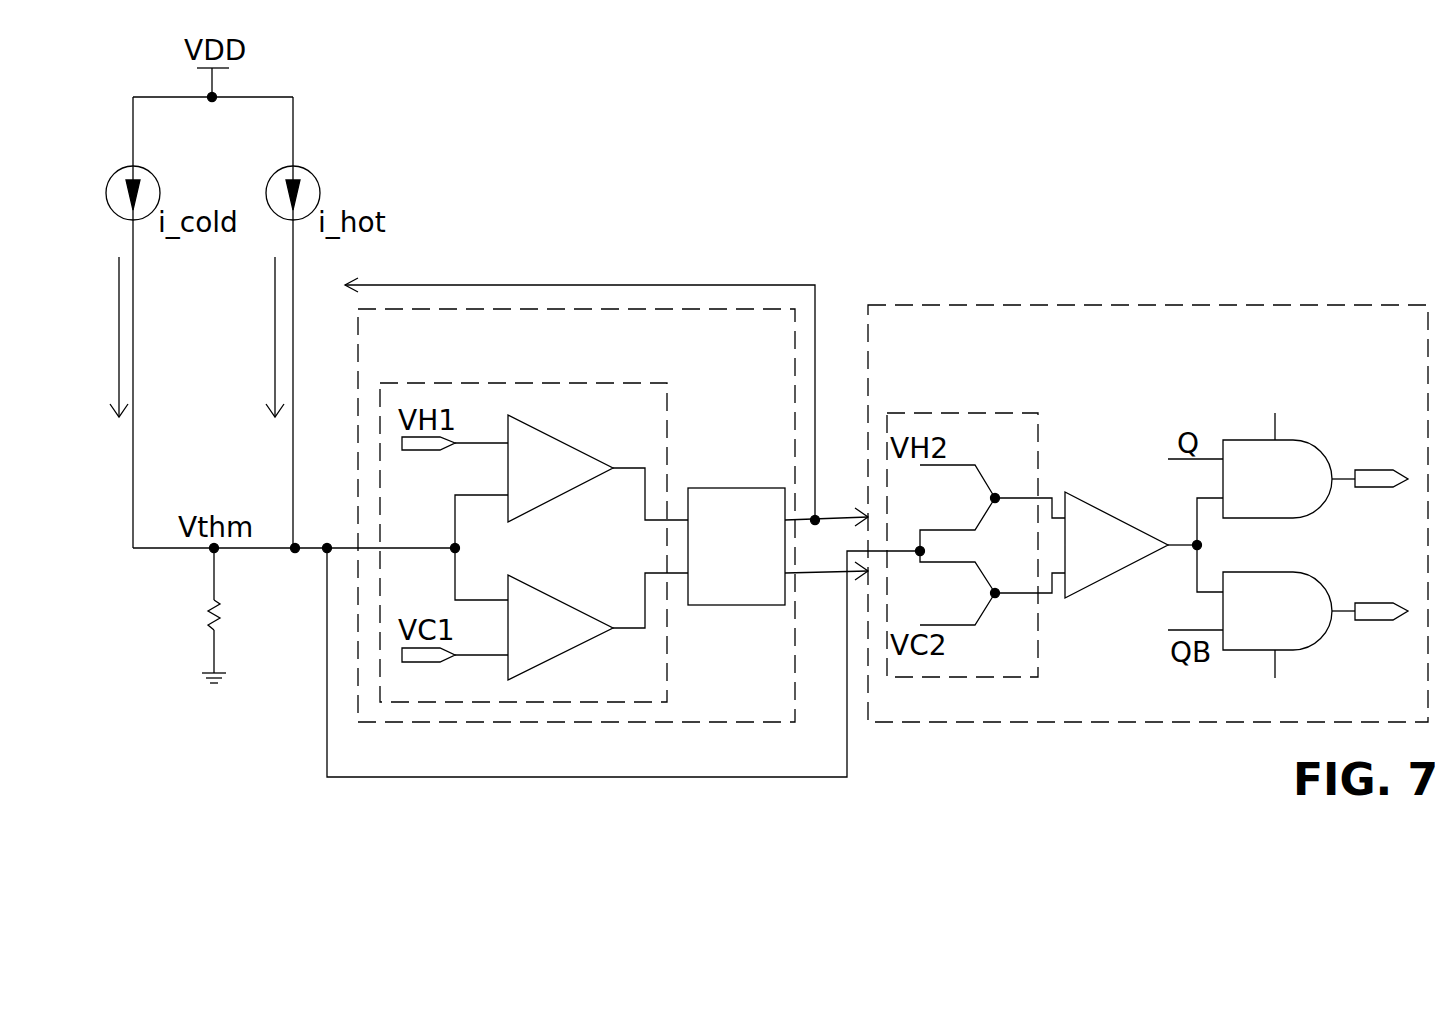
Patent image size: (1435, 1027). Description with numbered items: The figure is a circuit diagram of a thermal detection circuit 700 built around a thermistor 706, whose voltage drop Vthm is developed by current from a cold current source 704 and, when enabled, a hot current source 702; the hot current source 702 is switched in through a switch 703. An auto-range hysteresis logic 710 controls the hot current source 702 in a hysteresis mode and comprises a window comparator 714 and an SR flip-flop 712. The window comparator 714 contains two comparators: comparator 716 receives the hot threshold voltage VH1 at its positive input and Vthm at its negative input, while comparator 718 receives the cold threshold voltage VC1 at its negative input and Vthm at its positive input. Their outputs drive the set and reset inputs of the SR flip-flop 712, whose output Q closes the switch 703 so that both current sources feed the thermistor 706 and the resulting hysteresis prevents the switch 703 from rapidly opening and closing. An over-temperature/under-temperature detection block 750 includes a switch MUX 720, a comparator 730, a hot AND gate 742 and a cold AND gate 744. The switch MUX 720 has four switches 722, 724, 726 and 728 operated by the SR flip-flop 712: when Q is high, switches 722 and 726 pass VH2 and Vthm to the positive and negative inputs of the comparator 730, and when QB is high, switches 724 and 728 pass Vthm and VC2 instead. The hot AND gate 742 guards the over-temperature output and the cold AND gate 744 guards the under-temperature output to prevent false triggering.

The thermal detection circuit 700 is at (1188, 146).
The hot current source 702 is at (300, 166).
The switch 703 is at (297, 286).
The cold current source 704 is at (137, 166).
The thermistor 706 is at (215, 600).
The auto-range hysteresis logic 710 is at (530, 723).
The SR flip-flop 712 is at (693, 488).
The window comparator 714 is at (548, 383).
The comparator 716 is at (550, 432).
The comparator 718 is at (550, 592).
The switch MUX 720 is at (958, 413).
The switch 722 is at (947, 462).
The switch 724 is at (957, 529).
The switch 726 is at (940, 562).
The switch 728 is at (947, 628).
The comparator 730 is at (1090, 505).
The hot AND gate 742 is at (1248, 440).
The cold AND gate 744 is at (1248, 650).
The over-temperature/under-temperature detection block 750 is at (1082, 305).